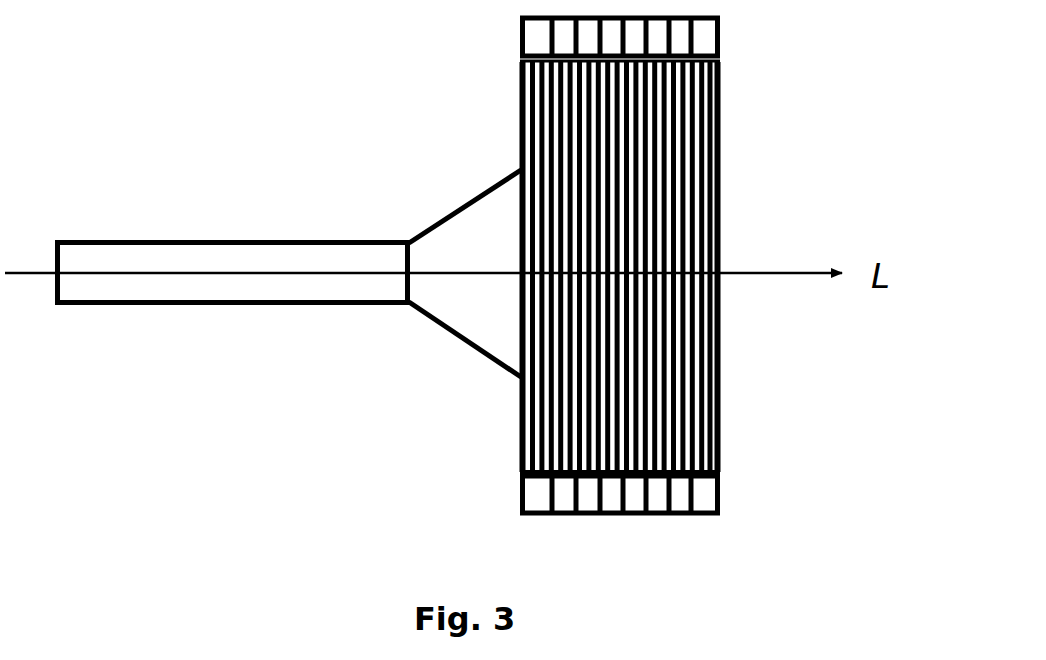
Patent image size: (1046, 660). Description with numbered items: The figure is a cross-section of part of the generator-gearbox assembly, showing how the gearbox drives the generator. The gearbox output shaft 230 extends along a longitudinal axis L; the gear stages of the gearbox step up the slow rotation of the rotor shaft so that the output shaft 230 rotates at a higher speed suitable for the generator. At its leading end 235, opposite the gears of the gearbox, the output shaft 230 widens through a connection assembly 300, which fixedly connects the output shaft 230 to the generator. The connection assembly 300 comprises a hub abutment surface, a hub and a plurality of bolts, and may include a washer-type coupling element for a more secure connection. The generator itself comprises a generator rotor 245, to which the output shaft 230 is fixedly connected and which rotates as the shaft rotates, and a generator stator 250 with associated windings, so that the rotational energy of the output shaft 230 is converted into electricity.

The output shaft 230 is at (133, 230).
The leading end 235 is at (387, 258).
The connection assembly 300 is at (483, 303).
The generator rotor 245 is at (741, 175).
The generator stator 250 is at (734, 42).